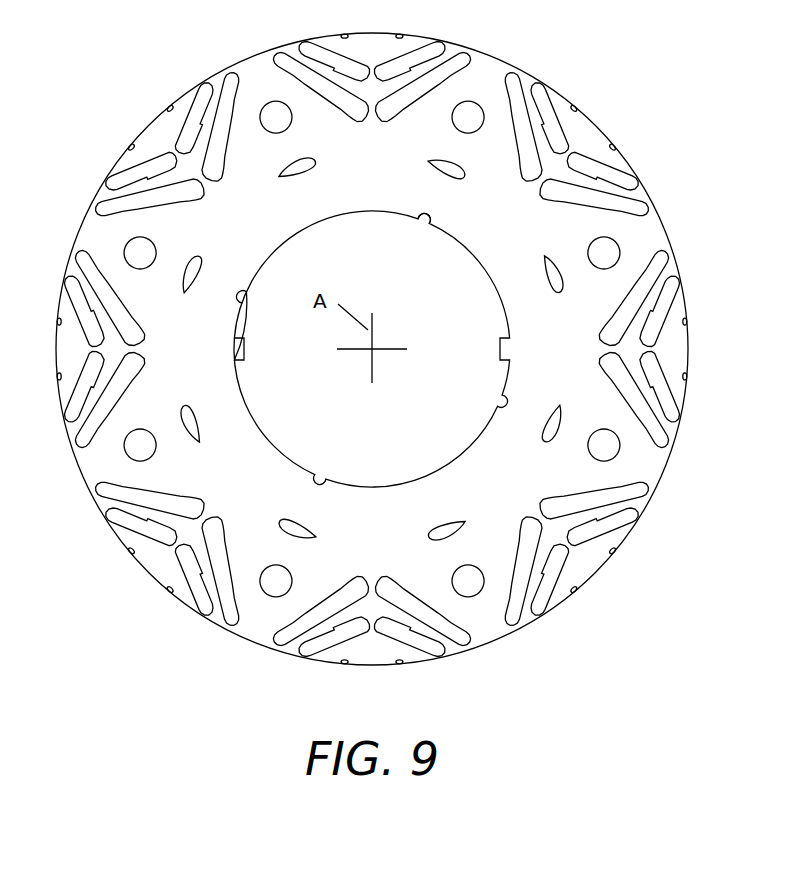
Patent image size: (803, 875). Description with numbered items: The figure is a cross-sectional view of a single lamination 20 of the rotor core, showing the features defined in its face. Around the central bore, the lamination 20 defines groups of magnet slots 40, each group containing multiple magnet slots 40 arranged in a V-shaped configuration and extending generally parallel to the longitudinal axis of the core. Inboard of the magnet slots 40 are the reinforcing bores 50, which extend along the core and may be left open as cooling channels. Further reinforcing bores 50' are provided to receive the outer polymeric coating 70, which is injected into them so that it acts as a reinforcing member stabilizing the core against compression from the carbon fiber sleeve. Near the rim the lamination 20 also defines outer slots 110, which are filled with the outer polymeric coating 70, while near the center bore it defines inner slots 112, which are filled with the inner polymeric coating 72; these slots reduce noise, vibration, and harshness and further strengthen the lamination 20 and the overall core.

The lamination 20 is at (583, 135).
The magnet slot 40 is at (443, 72).
The reinforcing bore 50 is at (372, 274).
The reinforcing bore 50' is at (372, 306).
The outer polymeric coating 70 is at (131, 148).
The inner polymeric coating 72 is at (430, 226).
The outer slot 110 is at (262, 51).
The inner slot 112 is at (418, 222).